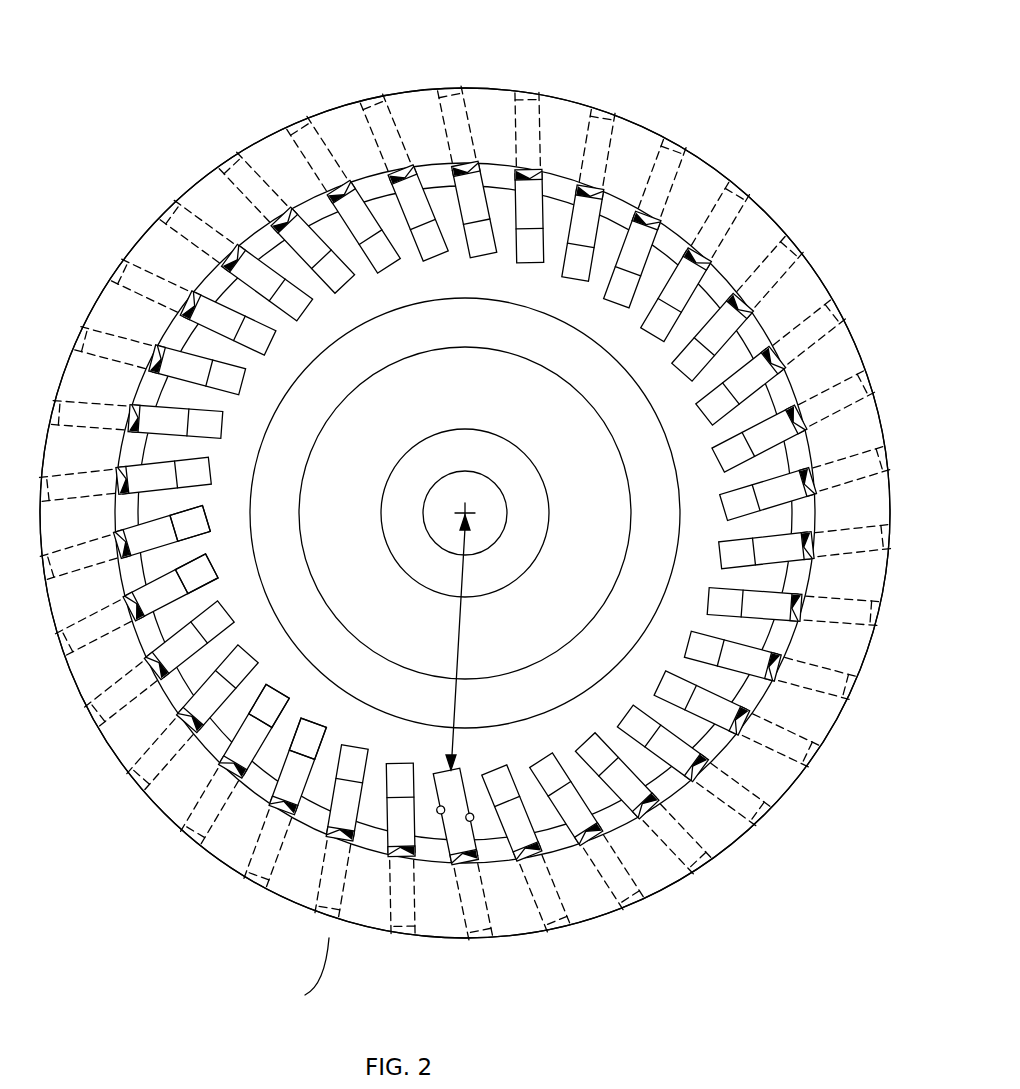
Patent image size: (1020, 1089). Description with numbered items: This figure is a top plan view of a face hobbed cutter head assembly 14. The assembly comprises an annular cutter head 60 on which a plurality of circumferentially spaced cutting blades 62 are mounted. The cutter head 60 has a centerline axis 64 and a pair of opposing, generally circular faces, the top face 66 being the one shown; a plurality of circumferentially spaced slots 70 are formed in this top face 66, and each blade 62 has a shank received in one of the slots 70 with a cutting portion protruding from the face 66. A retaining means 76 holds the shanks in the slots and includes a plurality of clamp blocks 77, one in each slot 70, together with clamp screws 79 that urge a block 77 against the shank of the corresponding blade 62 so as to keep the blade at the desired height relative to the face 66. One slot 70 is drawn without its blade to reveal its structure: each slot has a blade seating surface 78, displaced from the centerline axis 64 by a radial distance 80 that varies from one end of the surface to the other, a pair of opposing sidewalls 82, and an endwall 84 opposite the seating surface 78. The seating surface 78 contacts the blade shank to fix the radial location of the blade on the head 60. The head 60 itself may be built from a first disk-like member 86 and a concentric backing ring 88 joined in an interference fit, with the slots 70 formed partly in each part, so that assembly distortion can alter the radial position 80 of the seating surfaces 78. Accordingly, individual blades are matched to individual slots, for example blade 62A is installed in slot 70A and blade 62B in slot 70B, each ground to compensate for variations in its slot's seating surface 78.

The cutter head assembly 14 is at (554, 76).
The cutter head 60 is at (638, 132).
The cutting blades 62 is at (428, 247).
The blade 62A is at (193, 520).
The blade 62B is at (205, 565).
The centerline axis 64 is at (470, 508).
The top face 66 is at (719, 588).
The slots 70 is at (339, 708).
The slot 70A is at (232, 521).
The slot 70B is at (242, 570).
The retaining means 76 is at (299, 966).
The clamp blocks 77 is at (293, 772).
The blade seating surface 78 is at (436, 782).
The clamp screws 79 is at (263, 862).
The radial distance 80 is at (459, 637).
The sidewalls 82 is at (478, 820).
The endwall 84 is at (524, 885).
The first disk-like member 86 is at (594, 297).
The backing ring 88 is at (748, 328).